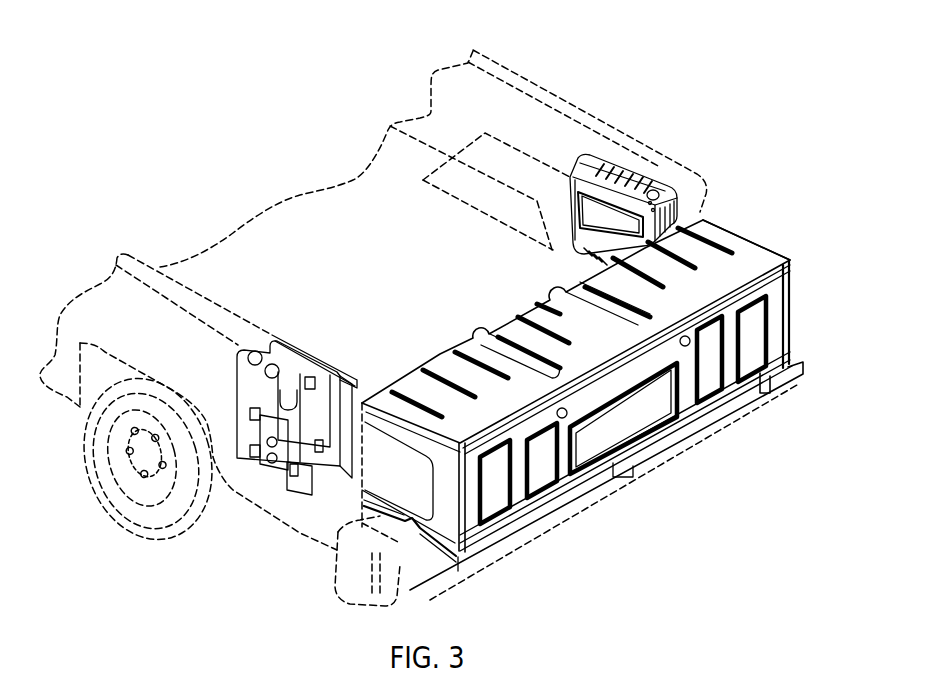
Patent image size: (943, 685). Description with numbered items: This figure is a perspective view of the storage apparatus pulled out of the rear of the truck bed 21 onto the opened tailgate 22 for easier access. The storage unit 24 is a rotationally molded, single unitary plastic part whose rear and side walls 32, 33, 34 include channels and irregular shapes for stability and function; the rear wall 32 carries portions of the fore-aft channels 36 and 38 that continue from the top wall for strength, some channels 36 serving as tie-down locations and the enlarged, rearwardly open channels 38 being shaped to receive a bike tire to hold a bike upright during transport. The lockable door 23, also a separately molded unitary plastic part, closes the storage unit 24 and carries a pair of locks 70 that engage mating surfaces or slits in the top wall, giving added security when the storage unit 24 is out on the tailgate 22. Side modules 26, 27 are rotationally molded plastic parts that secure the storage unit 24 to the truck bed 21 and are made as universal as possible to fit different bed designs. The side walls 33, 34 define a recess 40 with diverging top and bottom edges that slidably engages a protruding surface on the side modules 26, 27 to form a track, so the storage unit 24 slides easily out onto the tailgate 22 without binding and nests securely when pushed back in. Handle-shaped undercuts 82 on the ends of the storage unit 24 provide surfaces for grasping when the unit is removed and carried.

The truck bed 21 is at (322, 212).
The tailgate 22 is at (581, 499).
The door 23 is at (768, 382).
The storage unit 24 is at (539, 390).
The side module 26 is at (240, 420).
The side module 27 is at (612, 152).
The rear wall 32 is at (497, 325).
The side wall 33 is at (425, 452).
The side wall 34 is at (748, 226).
The fore-aft channels 36 is at (395, 400).
The fore-aft channels 38 is at (557, 253).
The recess 40 is at (395, 477).
The locks 70 is at (700, 368).
The handle-shaped undercuts 82 is at (372, 553).